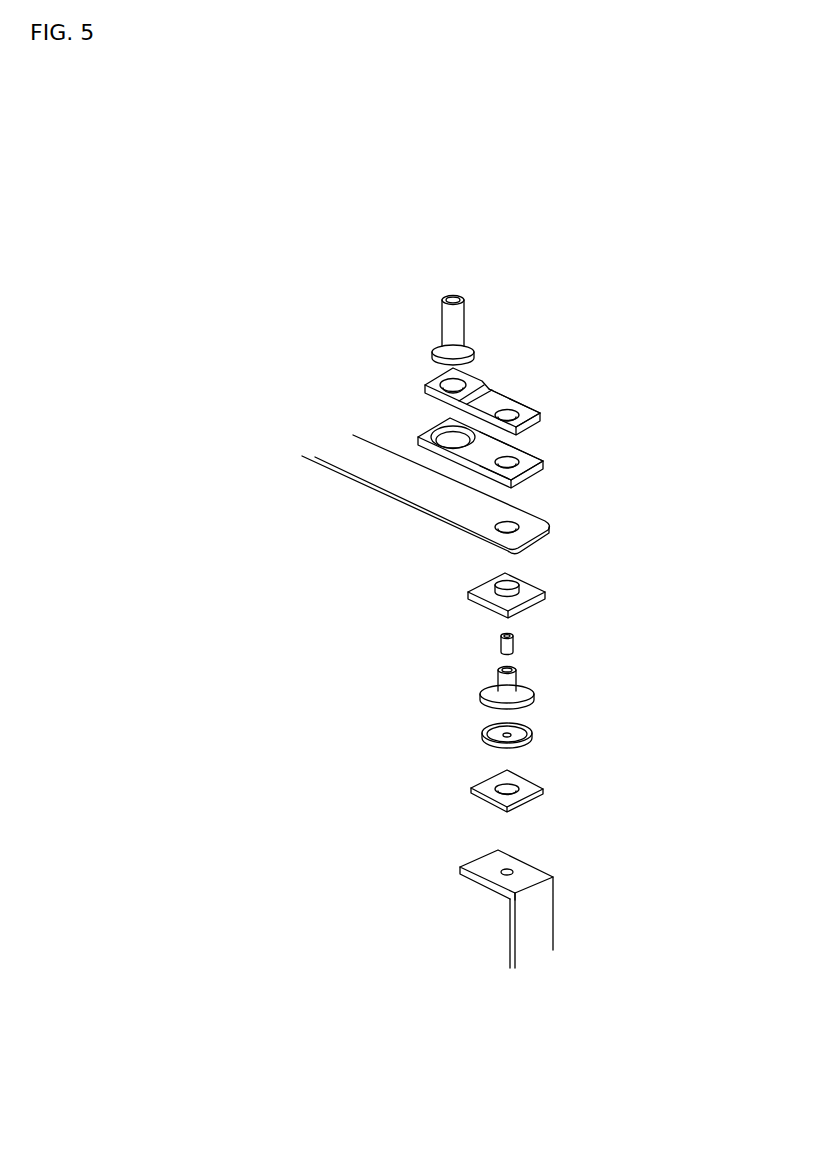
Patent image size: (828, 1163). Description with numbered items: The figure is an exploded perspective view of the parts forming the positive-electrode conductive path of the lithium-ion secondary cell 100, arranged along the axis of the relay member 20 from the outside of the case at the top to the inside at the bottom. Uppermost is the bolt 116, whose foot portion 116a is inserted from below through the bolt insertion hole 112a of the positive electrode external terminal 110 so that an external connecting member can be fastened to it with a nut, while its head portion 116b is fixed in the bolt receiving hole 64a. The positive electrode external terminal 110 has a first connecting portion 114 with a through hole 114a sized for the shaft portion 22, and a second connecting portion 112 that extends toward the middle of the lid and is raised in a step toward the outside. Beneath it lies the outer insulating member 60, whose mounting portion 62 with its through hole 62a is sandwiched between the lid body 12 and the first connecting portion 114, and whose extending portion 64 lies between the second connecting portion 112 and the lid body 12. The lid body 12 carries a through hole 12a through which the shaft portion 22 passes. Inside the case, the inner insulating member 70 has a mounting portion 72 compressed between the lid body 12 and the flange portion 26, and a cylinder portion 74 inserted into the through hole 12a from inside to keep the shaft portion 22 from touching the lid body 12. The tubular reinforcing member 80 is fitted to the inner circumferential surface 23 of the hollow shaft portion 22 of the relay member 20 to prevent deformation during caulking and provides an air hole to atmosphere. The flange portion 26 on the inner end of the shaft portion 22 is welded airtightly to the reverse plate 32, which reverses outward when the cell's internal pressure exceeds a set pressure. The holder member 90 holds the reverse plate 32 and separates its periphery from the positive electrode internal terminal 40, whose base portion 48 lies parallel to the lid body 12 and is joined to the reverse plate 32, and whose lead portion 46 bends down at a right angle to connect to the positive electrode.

The lithium-ion secondary cell 100 is at (659, 265).
The bolt 116 is at (477, 295).
The foot portion 116a is at (443, 320).
The head portion 116b is at (436, 348).
The positive electrode external terminal 110 is at (509, 387).
The second connecting portion 112 is at (473, 386).
The bolt insertion hole 112a is at (448, 379).
The first connecting portion 114 is at (527, 414).
The through hole 114a is at (508, 411).
The outer insulating member 60 is at (557, 471).
The mounting portion 62 is at (531, 463).
The through hole 62a is at (500, 458).
The extending portion 64 is at (438, 430).
The bolt receiving hole 64a is at (450, 445).
The lid body 12 is at (548, 528).
The through hole 12a is at (503, 521).
The inner insulating member 70 is at (560, 596).
The mounting portion 72 is at (528, 589).
The cylinder portion 74 is at (493, 592).
The reinforcing member 80 is at (516, 643).
The relay member 20 is at (549, 702).
The shaft portion 22 is at (489, 684).
The inner circumferential surface 23 is at (502, 669).
The flange portion 26 is at (527, 690).
The reverse plate 32 is at (531, 733).
The holder member 90 is at (544, 788).
The positive electrode internal terminal 40 is at (566, 897).
The lead portion 46 is at (538, 929).
The base portion 48 is at (493, 871).